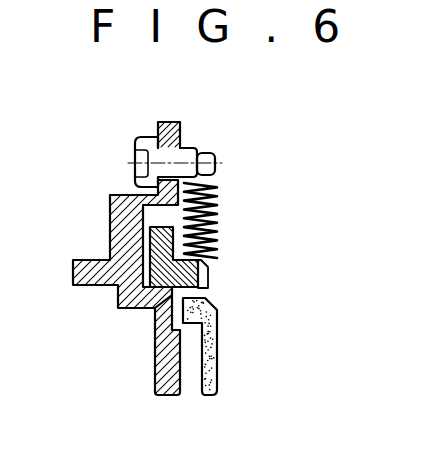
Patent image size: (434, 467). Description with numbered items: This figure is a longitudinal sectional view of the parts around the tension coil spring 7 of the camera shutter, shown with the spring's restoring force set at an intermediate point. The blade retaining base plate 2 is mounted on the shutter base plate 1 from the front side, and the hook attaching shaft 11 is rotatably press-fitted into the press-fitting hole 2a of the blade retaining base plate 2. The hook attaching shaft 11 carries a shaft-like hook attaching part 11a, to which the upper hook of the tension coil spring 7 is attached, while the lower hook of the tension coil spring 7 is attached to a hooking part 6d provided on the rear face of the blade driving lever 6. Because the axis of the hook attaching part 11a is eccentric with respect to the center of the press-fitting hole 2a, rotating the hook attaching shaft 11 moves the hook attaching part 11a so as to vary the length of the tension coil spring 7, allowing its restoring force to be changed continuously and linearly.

The shutter base plate 1 is at (218, 355).
The blade retaining base plate 2 is at (120, 228).
The press-fitting hole 2a is at (167, 137).
The blade driving lever 6 is at (156, 286).
The hooking part 6d is at (209, 277).
The tension coil spring 7 is at (215, 212).
The hook attaching shaft 11 is at (147, 143).
The hook attaching part 11a is at (214, 156).